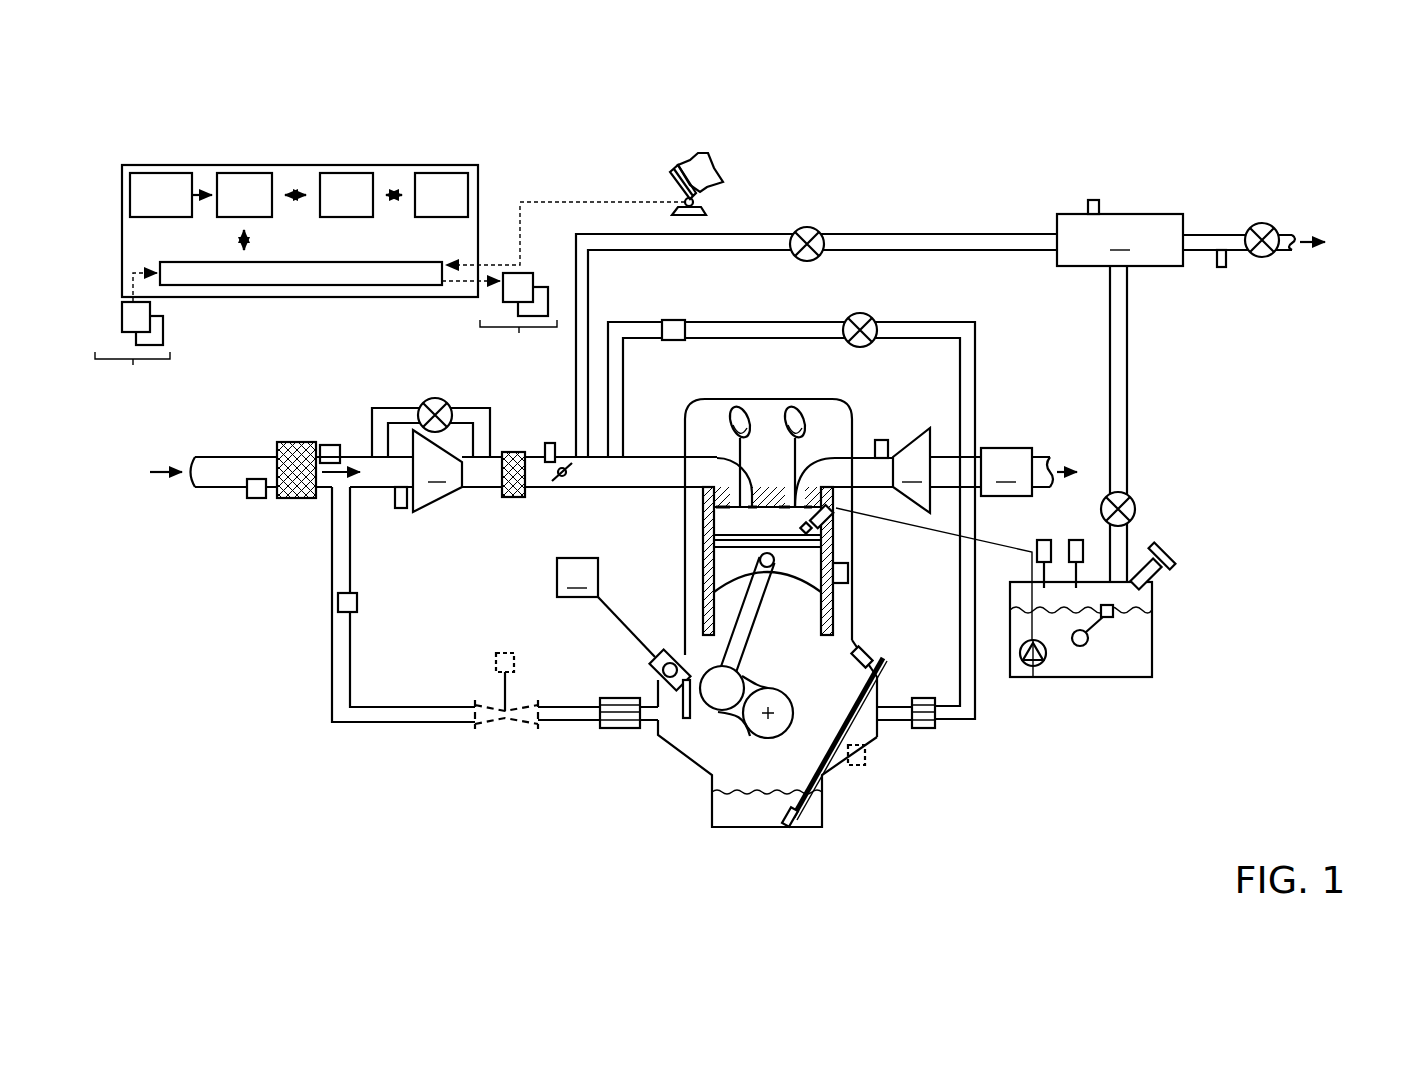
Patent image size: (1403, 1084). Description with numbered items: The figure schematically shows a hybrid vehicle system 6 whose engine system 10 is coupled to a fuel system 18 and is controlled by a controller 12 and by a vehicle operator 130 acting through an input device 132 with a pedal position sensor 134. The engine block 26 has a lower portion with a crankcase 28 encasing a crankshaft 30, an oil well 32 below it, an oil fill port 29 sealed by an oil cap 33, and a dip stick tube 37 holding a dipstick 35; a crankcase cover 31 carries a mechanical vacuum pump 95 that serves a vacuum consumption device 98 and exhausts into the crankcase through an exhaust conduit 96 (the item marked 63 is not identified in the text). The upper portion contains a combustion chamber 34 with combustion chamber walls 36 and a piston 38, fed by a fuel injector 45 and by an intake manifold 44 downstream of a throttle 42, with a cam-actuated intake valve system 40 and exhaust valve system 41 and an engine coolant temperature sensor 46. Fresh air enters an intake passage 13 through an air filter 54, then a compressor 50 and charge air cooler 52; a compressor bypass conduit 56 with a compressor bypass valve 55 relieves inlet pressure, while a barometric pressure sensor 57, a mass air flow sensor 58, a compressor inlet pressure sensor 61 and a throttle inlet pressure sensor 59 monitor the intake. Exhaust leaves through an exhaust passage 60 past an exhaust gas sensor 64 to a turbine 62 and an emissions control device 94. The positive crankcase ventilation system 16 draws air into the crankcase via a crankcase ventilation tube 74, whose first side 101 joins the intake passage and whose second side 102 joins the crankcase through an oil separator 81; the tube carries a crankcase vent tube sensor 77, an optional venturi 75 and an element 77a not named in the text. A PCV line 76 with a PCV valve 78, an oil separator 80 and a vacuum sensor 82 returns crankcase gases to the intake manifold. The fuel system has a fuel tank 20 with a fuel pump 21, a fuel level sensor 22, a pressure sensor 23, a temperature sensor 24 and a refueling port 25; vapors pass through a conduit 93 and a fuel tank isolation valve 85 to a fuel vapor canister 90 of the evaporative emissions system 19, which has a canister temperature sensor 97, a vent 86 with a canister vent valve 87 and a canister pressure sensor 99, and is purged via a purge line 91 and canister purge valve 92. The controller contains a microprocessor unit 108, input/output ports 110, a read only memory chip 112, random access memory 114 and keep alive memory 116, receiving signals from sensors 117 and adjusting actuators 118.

The hybrid vehicle system 6 is at (1228, 134).
The engine system 10 is at (930, 160).
The controller 12 is at (462, 167).
The intake passage 13 is at (256, 457).
The positive crankcase ventilation system 16 is at (1008, 345).
The fuel system 18 is at (1090, 704).
The evaporative emissions system 19 is at (1196, 316).
The fuel tank 20 is at (1010, 668).
The fuel pump 21 is at (1043, 648).
The fuel level sensor 22 is at (1083, 647).
The pressure sensor 23 is at (1042, 540).
The temperature sensor 24 is at (1076, 540).
The refueling port 25 is at (1156, 586).
The engine block 26 is at (882, 802).
The crankcase 28 is at (866, 754).
The oil fill port 29 is at (852, 655).
The crankshaft 30 is at (718, 713).
The crankcase cover 31 is at (691, 665).
The oil well 32 is at (770, 808).
The oil cap 33 is at (862, 652).
The combustion chamber 34 is at (716, 508).
The dipstick 35 is at (884, 661).
The combustion chamber walls 36 is at (826, 545).
The dip stick tube 37 is at (852, 706).
The piston 38 is at (725, 562).
The intake valve system 40 is at (744, 432).
The exhaust valve system 41 is at (798, 432).
The throttle 42 is at (560, 478).
The intake manifold 44 is at (630, 487).
The fuel injector 45 is at (840, 512).
The engine coolant temperature sensor 46 is at (851, 580).
The compressor 50 is at (437, 471).
The charge air cooler 52 is at (510, 497).
The air filter 54 is at (292, 442).
The compressor bypass valve 55 is at (440, 400).
The compressor bypass conduit 56 is at (488, 408).
The barometric pressure sensor 57 is at (258, 498).
The mass air flow sensor 58 is at (331, 445).
The pressure sensor 59 is at (550, 443).
The exhaust passage 60 is at (880, 440).
The pressure sensor 61 is at (401, 508).
The turbine 62 is at (911, 470).
The oil level sensor lead 63 is at (857, 766).
The exhaust gas sensor 64 is at (893, 445).
The crankcase ventilation tube 74 is at (570, 722).
The venturi 75 is at (510, 730).
The PCV line 76 is at (775, 338).
The crankcase vent tube sensor 77 is at (357, 605).
The crankcase ventilation sensor 77a is at (505, 652).
The PCV valve 78 is at (860, 313).
The oil separator 80 is at (918, 698).
The oil separator 81 is at (612, 698).
The vacuum sensor 82 is at (675, 340).
The fuel tank isolation valve 85 is at (1135, 505).
The vent 86 is at (1198, 235).
The canister vent valve 87 is at (1268, 223).
The fuel vapor canister 90 is at (1120, 240).
The purge line 91 is at (980, 234).
The canister purge valve 92 is at (816, 228).
The conduit 93 is at (1128, 340).
The emissions control device 94 is at (1021, 471).
The mechanical vacuum pump 95 is at (673, 655).
The exhaust conduit 96 is at (682, 706).
The canister temperature sensor 97 is at (1093, 200).
The vacuum consumption device 98 is at (606, 607).
The canister pressure sensor 99 is at (1222, 267).
The first side 101 is at (326, 497).
The second side 102 is at (653, 740).
The microprocessor unit 108 is at (236, 173).
The input/output ports 110 is at (302, 253).
The read only memory chip 112 is at (148, 173).
The random access memory 114 is at (330, 173).
The keep alive memory 116 is at (425, 173).
The sensors 117 is at (133, 340).
The actuators 118 is at (505, 290).
The vehicle operator 130 is at (720, 168).
The input device 132 is at (671, 182).
The pedal position sensor 134 is at (698, 203).